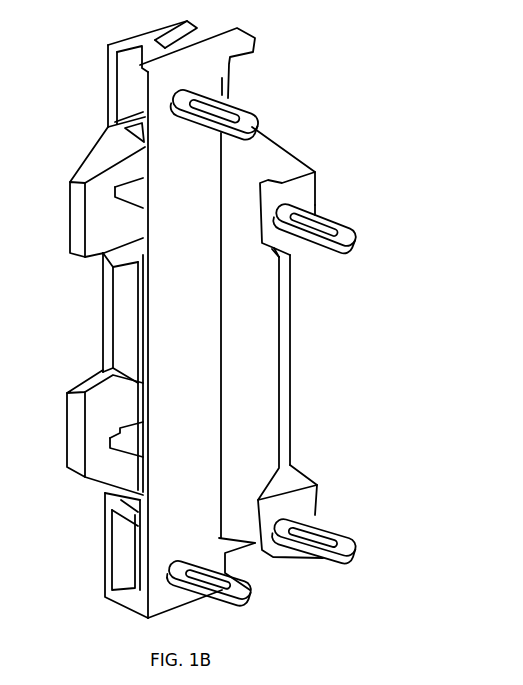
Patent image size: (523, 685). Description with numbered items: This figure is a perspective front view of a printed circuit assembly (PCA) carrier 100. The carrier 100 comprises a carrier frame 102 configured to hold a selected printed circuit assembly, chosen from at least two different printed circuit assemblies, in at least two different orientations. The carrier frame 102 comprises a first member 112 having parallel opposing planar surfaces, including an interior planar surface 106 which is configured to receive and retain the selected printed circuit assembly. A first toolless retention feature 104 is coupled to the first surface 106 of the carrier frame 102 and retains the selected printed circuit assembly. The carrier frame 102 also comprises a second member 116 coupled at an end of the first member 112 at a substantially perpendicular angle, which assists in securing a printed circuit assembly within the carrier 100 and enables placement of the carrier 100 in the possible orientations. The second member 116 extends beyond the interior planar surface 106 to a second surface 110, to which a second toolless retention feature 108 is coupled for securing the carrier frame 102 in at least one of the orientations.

The printed circuit assembly carrier 100 is at (414, 120).
The carrier frame 102 is at (265, 319).
The first toolless retention feature 104 is at (233, 112).
The first surface 106 is at (162, 547).
The second toolless retention feature 108 is at (348, 233).
The second surface 110 is at (287, 387).
The first member 112 is at (112, 330).
The second member 116 is at (285, 148).